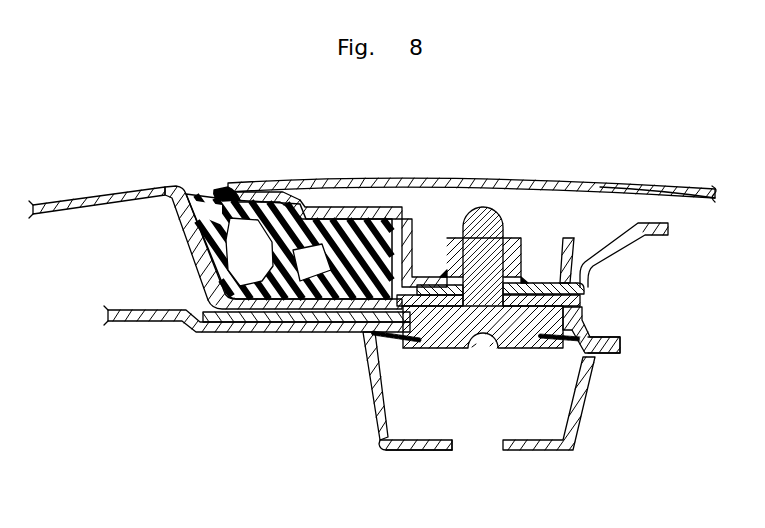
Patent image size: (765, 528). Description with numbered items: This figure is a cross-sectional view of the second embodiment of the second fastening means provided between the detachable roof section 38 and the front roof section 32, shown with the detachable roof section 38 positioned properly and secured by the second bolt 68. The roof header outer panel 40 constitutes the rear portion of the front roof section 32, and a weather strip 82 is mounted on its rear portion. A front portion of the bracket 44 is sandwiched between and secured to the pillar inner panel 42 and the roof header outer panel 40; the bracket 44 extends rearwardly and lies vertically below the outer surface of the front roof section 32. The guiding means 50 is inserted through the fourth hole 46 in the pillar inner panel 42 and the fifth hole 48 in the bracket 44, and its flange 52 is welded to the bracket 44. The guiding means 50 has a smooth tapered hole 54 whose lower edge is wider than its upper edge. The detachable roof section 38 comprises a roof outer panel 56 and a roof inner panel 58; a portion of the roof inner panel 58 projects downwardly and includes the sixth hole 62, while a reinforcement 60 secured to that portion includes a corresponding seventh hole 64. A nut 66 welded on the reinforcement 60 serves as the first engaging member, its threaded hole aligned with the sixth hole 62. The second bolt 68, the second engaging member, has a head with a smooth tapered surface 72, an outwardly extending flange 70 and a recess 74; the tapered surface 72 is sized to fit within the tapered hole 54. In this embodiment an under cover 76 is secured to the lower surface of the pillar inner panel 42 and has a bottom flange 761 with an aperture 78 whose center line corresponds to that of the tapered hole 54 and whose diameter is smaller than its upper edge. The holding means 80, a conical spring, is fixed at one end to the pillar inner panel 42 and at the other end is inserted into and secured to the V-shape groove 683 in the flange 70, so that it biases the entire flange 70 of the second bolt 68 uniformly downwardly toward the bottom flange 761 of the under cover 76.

The front roof section 32 is at (84, 178).
The detachable roof section 38 is at (701, 172).
The roof header outer panel 40 is at (140, 190).
The pillar inner panel 42 is at (225, 333).
The bracket 44 is at (303, 322).
The fourth hole 46 is at (578, 410).
The fifth hole 48 is at (540, 346).
The guiding means 50 is at (428, 344).
The flange 52 is at (580, 300).
The tapered hole 54 is at (522, 262).
The roof outer panel 56 is at (645, 186).
The roof inner panel 58 is at (660, 233).
The reinforcement 60 is at (388, 207).
The sixth hole 62 is at (498, 265).
The seventh hole 64 is at (482, 206).
The nut 66 is at (525, 241).
The second bolt 68 is at (560, 353).
The flange 70 is at (620, 362).
The tapered surface 72 is at (421, 288).
The recess 74 is at (478, 334).
The under cover 76 is at (447, 458).
The aperture 78 is at (453, 442).
The holding means 80 is at (368, 400).
The weather strip seal 82 is at (205, 187).
The V-shape groove 683 is at (403, 342).
The bottom flange 761 is at (402, 451).